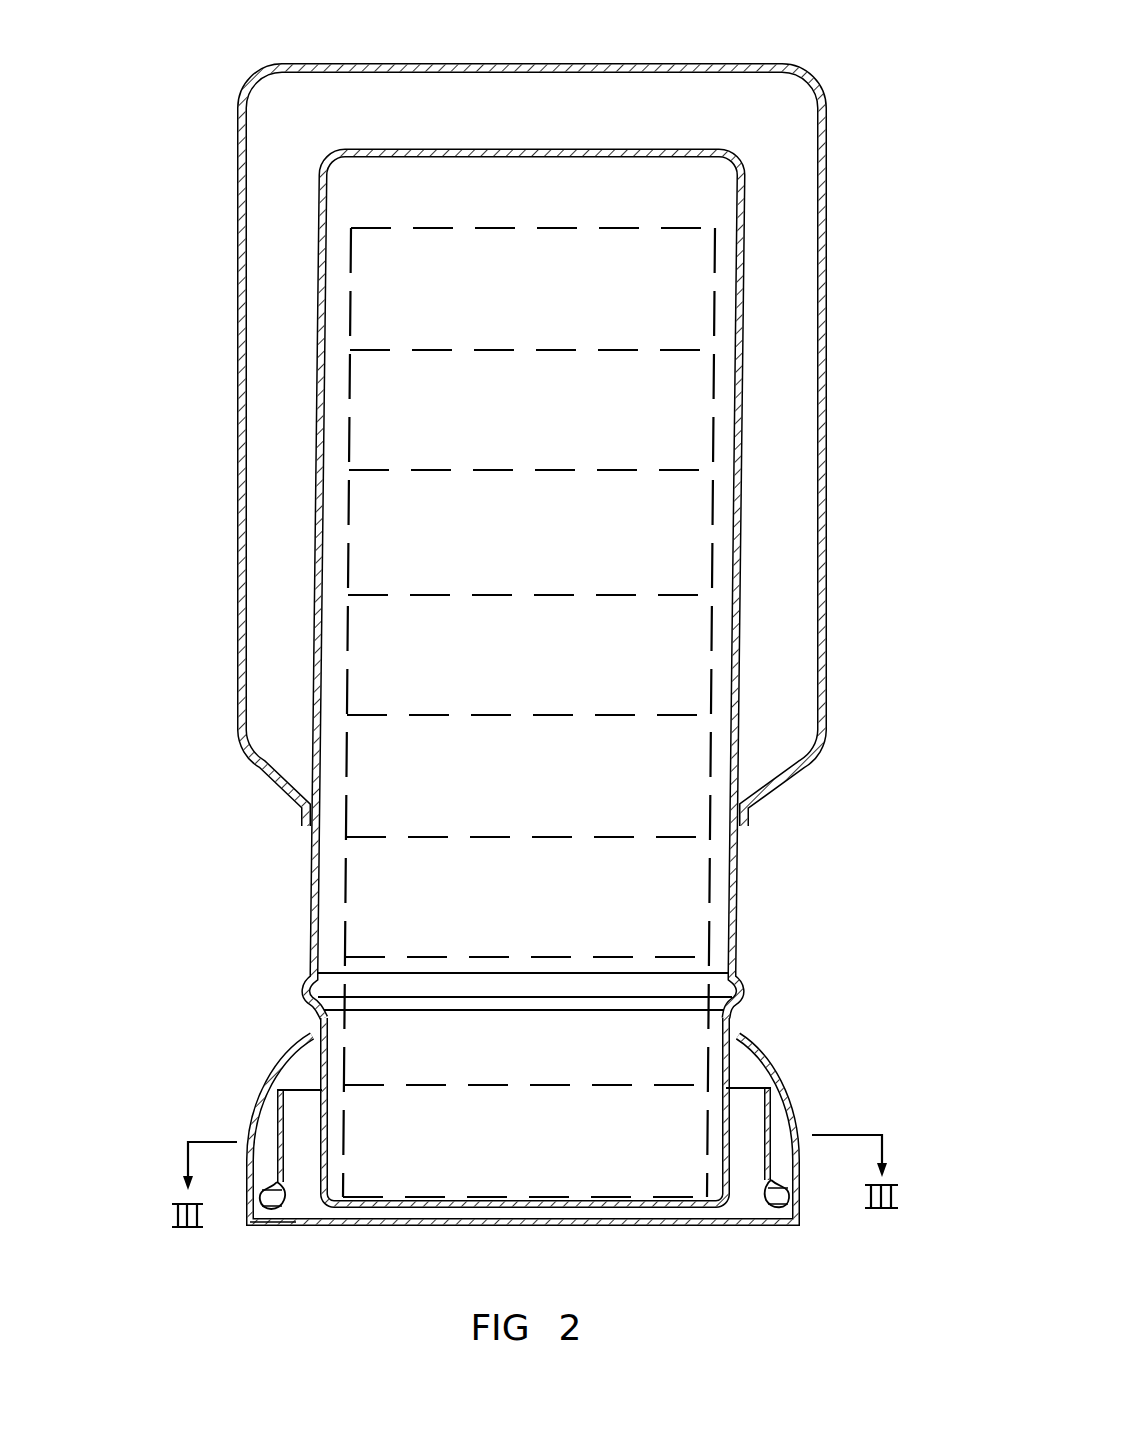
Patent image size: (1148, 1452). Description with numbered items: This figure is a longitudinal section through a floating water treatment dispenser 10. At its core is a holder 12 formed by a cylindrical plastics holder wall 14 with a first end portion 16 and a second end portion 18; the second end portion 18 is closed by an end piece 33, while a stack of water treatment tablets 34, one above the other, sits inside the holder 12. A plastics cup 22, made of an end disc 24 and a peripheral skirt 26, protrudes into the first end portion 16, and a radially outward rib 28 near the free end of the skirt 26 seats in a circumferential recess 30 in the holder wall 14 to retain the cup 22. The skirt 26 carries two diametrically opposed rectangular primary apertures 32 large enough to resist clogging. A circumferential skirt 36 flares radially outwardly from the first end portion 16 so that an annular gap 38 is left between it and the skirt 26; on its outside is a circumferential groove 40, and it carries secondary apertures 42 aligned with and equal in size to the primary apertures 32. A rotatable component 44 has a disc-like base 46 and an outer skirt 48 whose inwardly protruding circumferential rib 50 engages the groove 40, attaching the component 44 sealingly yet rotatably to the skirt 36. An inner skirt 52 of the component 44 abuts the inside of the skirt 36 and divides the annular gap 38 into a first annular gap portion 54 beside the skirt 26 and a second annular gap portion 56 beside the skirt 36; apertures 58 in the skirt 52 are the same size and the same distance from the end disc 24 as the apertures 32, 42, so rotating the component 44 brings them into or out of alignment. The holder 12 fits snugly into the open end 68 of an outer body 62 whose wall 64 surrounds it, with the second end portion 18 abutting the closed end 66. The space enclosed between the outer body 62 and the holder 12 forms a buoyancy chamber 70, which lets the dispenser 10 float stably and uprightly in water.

The dispenser 10 is at (148, 148).
The holder 12 is at (760, 880).
The holder wall 14 is at (313, 905).
The first end portion 16 is at (318, 980).
The second end portion 18 is at (745, 190).
The cup 22 is at (478, 1232).
The end disc 24 is at (540, 1228).
The skirt 26 is at (315, 1045).
The rib 28 is at (330, 1002).
The circumferential recess 30 is at (308, 1000).
The primary apertures 32 is at (345, 1120).
The end piece 33 is at (605, 149).
The water treatment tablets 34 is at (572, 548).
The circumferential skirt 36 is at (285, 1062).
The annular gap 38 is at (290, 1235).
The circumferential groove 40 is at (812, 1160).
The secondary apertures 42 is at (238, 1117).
The component 44 is at (505, 1238).
The base 46 is at (694, 1228).
The skirt 48 is at (790, 1212).
The inwardly protruding circumferential rib 50 is at (795, 1190).
The skirt 52 is at (785, 1095).
The first annular gap portion 54 is at (300, 1120).
The second annular gap portion 56 is at (275, 1172).
The apertures 58 is at (290, 1142).
The outer body 62 is at (870, 85).
The wall 64 is at (825, 375).
The closed end 66 is at (715, 62).
The open end 68 is at (296, 845).
The buoyancy chamber 70 is at (780, 522).